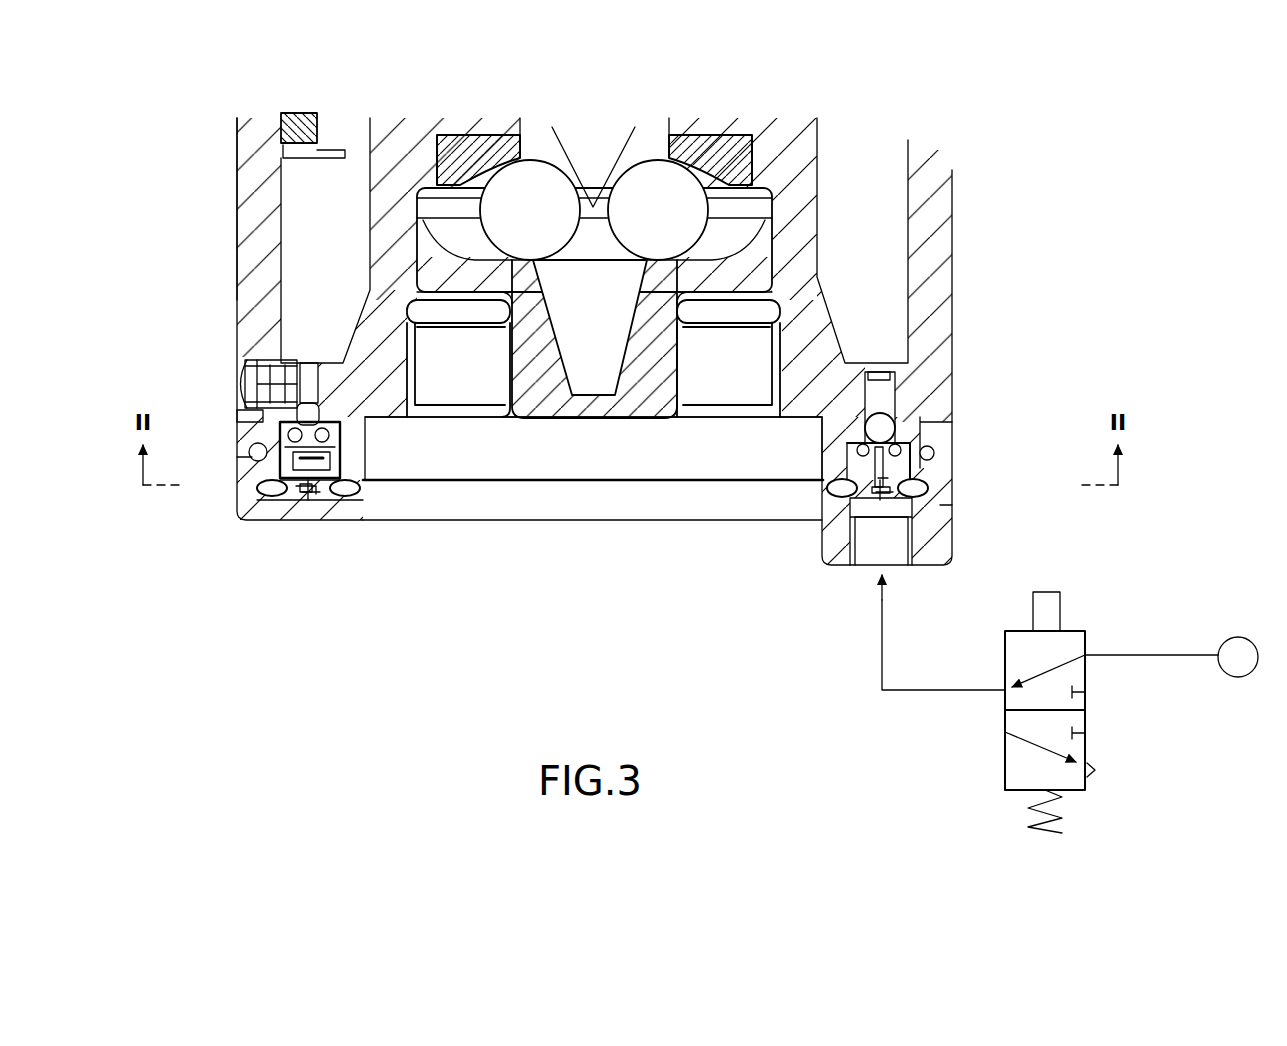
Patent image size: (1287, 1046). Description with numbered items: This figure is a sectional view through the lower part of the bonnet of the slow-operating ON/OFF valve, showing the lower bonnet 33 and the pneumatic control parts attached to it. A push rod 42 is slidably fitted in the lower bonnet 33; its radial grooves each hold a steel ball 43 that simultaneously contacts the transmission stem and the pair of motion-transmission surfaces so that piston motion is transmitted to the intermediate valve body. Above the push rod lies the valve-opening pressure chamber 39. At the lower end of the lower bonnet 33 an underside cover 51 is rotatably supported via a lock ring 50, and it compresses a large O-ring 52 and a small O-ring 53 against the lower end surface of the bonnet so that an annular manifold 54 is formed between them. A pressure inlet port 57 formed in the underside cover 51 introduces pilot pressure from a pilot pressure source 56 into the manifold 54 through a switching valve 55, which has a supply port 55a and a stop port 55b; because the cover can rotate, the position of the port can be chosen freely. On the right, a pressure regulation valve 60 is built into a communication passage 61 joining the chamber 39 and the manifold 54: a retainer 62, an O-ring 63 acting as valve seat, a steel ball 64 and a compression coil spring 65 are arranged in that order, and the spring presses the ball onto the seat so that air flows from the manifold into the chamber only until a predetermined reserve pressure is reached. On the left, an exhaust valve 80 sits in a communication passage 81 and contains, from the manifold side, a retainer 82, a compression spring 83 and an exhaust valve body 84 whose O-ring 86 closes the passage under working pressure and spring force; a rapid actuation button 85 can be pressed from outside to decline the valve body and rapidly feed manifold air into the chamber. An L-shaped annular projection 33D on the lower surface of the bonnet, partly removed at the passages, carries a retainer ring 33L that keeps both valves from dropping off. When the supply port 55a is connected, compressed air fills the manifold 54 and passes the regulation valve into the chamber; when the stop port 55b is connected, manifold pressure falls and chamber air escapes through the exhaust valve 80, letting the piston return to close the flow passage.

The steel ball 43 is at (652, 192).
The valve-opening pressure chamber 39 is at (308, 223).
The lower bonnet 33 is at (252, 278).
The exhaust valve 80 is at (315, 352).
The communication passage 81 is at (262, 360).
The rapid actuation button 85 is at (262, 385).
The exhaust valve body 84 is at (303, 418).
The O-ring 86 is at (327, 436).
The lock ring 50 is at (252, 452).
The underside cover 51 is at (237, 458).
The retainer 82 is at (283, 467).
The large O-ring 52 is at (270, 498).
The retainer ring 33L is at (304, 497).
The manifold 54 is at (308, 497).
The L-shaped annular projection 33D is at (318, 500).
The compression spring 83 is at (310, 495).
The small O-ring 53 is at (347, 496).
The push rod 42 is at (643, 400).
The communication passage 61 is at (863, 452).
The retainer 62 is at (855, 470).
The O-ring 63 is at (858, 447).
The pressure regulation valve 60 is at (912, 396).
The compression coil spring 65 is at (870, 372).
The steel ball 64 is at (882, 428).
The pressure inlet port 57 is at (905, 570).
The switching valve 55 is at (1095, 605).
The supply port 55a is at (1085, 672).
The stop port 55b is at (1085, 748).
The pilot pressure source 56 is at (1238, 637).